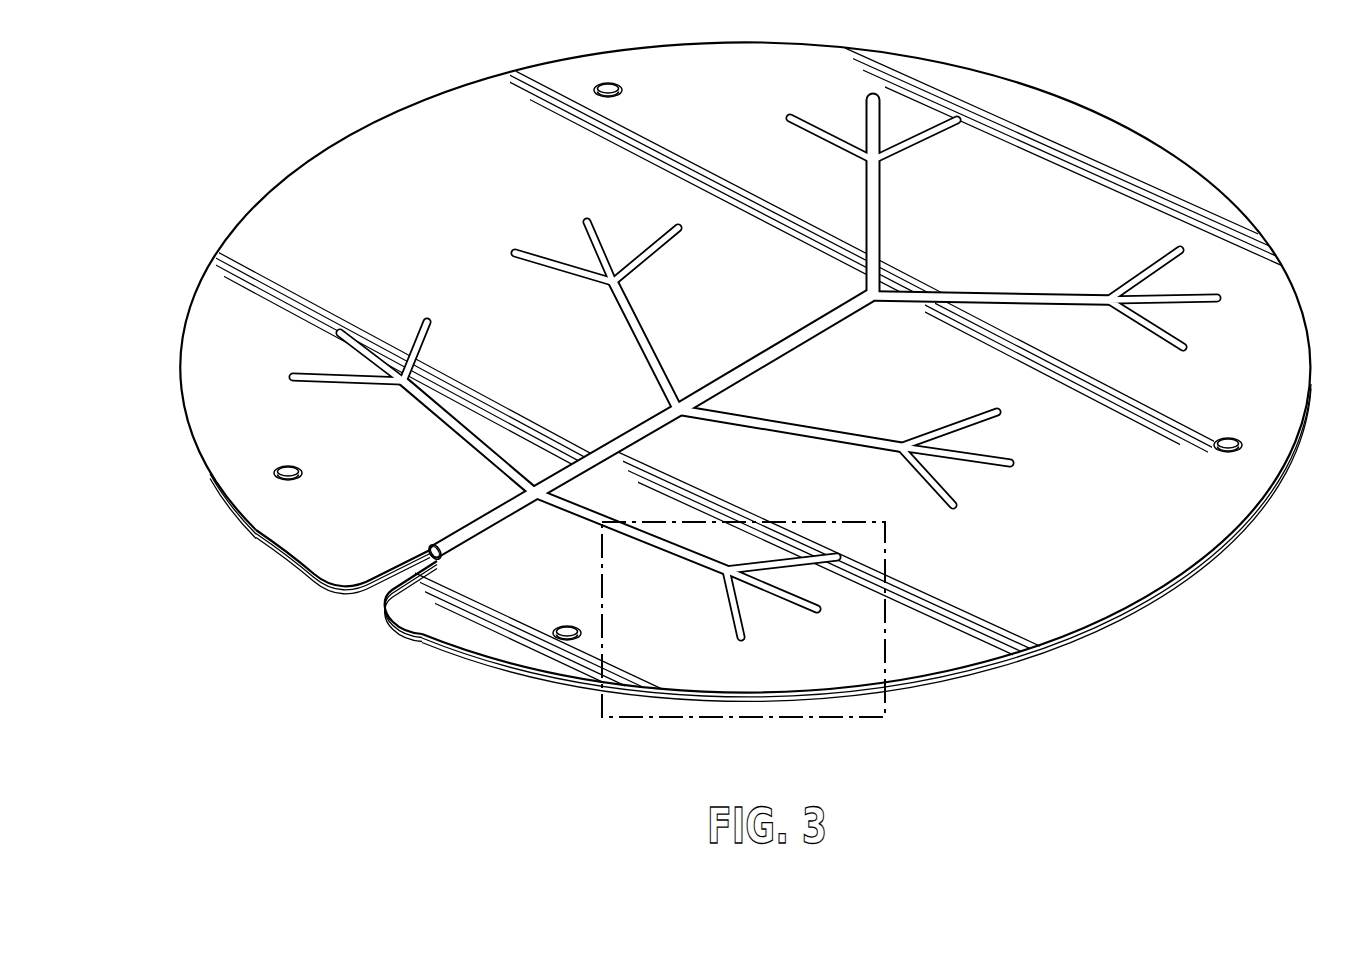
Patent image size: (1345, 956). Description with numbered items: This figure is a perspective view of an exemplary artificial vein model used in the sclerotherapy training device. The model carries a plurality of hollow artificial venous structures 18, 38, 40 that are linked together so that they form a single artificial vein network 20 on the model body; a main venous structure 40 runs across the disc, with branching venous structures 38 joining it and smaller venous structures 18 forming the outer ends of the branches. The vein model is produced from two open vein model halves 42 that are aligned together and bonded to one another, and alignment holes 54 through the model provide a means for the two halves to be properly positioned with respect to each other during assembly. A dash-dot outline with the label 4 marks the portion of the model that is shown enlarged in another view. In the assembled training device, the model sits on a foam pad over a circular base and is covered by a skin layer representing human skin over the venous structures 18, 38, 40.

The artificial vein network 20 is at (970, 158).
The open vein model half 42 is at (209, 425).
The alignment holes 54 is at (622, 94).
The hollow artificial venous structure 40 is at (777, 347).
The hollow artificial venous structure 38 is at (992, 296).
The hollow artificial venous structure 18 is at (813, 132).
The detail region of FIG. 4 is at (889, 721).